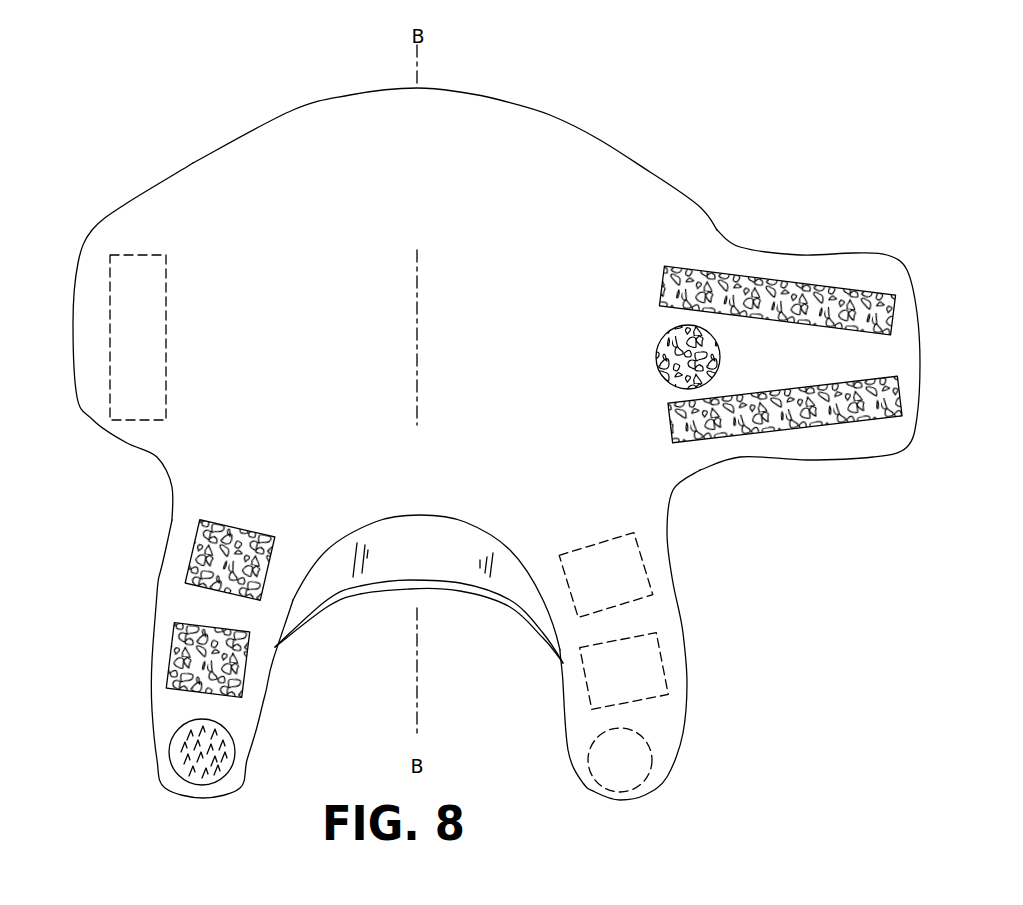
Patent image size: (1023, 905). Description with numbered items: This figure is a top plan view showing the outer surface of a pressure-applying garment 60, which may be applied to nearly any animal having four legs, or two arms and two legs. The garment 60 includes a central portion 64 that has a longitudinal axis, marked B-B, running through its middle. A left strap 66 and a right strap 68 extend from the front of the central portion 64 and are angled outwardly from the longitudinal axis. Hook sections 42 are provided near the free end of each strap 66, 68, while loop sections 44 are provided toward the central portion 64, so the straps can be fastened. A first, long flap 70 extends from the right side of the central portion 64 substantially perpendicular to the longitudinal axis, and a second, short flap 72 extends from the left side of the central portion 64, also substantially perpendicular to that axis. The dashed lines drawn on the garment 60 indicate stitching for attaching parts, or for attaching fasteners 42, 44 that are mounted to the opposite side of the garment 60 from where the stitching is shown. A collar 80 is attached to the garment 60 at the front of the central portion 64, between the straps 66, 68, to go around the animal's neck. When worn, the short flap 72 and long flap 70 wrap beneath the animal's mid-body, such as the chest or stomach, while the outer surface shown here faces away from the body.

The hook sections 42 is at (177, 752).
The loop sections 44 is at (688, 279).
The pressure-applying garment 60 is at (493, 434).
The central portion 64 is at (497, 121).
The left strap 66 is at (665, 725).
The right strap 68 is at (163, 710).
The long flap 70 is at (910, 351).
The short flap 72 is at (80, 337).
The collar 80 is at (528, 606).